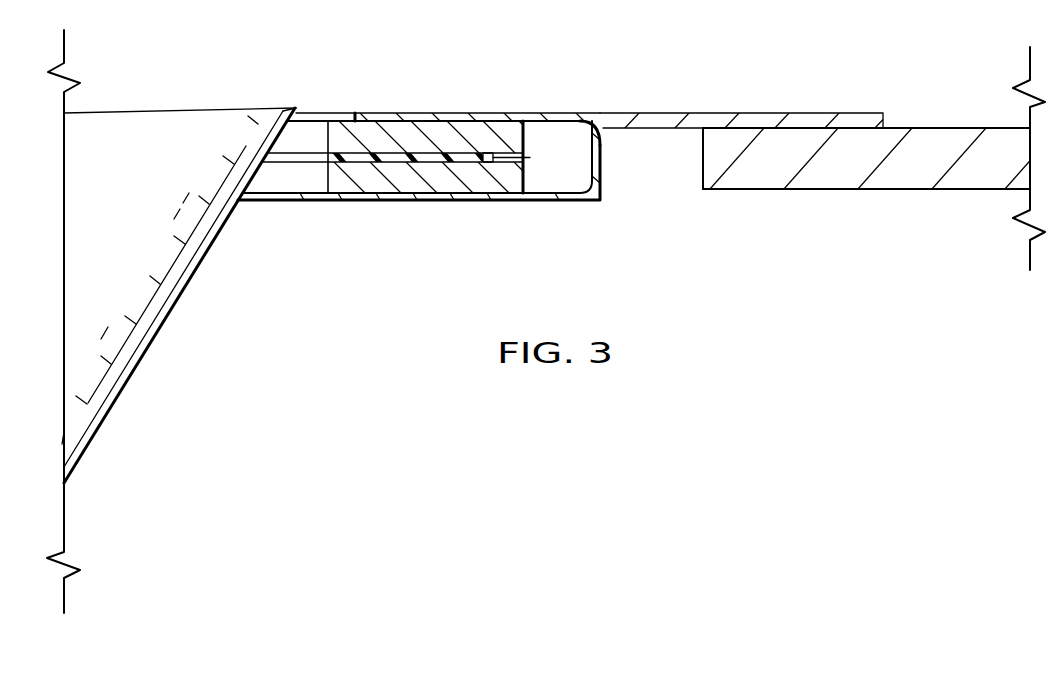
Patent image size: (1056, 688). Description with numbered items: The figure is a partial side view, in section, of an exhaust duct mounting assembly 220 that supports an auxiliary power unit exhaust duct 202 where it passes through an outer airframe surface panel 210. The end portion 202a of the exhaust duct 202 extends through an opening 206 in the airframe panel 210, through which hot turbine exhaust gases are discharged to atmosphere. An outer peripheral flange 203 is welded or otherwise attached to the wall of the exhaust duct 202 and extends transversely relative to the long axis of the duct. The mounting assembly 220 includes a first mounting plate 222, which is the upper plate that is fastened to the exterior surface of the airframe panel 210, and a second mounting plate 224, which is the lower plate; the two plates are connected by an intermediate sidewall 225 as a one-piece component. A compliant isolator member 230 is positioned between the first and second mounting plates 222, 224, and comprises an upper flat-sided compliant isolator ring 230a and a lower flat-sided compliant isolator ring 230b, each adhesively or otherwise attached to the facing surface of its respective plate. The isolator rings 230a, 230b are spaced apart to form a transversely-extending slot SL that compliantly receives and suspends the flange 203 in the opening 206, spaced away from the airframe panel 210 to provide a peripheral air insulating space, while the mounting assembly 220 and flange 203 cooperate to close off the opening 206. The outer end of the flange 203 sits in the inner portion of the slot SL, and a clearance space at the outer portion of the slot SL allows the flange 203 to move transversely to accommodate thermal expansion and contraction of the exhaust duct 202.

The exhaust duct 202 is at (157, 335).
The end portion 202a is at (256, 140).
The outer peripheral flange 203 is at (310, 153).
The opening 206 is at (700, 158).
The outer airframe surface panel 210 is at (947, 127).
The mounting assembly 220 is at (648, 72).
The first mounting plate 222 is at (751, 112).
The second mounting plate 224 is at (578, 202).
The intermediate sidewall 225 is at (612, 120).
The compliant isolator member 230 is at (505, 112).
The upper compliant isolator ring 230a is at (400, 130).
The lower compliant isolator ring 230b is at (368, 192).
The slot SL is at (531, 156).